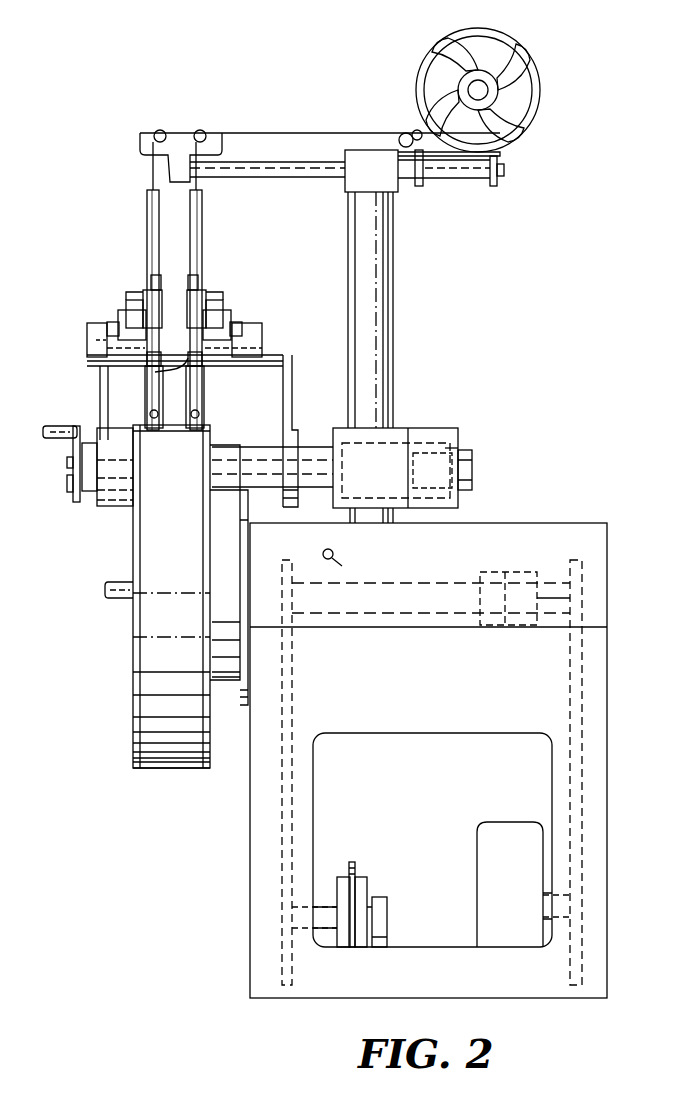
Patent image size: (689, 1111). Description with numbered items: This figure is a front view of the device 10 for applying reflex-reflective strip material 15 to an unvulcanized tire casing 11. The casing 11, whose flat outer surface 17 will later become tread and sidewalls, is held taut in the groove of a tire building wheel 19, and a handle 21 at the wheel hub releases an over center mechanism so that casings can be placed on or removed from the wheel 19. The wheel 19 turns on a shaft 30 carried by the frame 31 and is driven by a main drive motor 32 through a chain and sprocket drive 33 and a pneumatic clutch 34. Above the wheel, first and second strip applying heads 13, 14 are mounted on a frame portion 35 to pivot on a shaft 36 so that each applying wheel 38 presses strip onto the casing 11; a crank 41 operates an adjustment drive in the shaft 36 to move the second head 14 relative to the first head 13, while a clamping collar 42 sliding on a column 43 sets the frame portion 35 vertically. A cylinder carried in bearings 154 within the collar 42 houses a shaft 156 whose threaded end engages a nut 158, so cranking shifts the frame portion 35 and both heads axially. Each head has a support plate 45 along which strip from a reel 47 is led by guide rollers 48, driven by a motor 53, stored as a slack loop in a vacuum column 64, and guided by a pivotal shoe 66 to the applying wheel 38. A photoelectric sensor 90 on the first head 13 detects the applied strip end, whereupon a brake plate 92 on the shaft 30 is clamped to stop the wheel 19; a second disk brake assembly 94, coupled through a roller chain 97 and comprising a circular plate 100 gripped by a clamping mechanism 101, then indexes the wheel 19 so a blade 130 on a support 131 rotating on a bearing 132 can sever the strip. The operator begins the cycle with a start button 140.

The device 10 is at (248, 912).
The tire casing 11 is at (138, 681).
The first strip applying head 13 is at (140, 282).
The second strip applying head 14 is at (208, 282).
The strip material 15 is at (287, 128).
The outer surface 17 is at (158, 652).
The tire building wheel 19 is at (132, 726).
The handle 21 is at (106, 598).
The shaft 30 is at (450, 584).
The frame 31 is at (250, 988).
The main drive motor 32 is at (497, 824).
The chain and sprocket drive 33 is at (582, 838).
The pneumatic clutch 34 is at (520, 572).
The frame portion 35 is at (100, 388).
The shaft 36 is at (262, 440).
The applying wheel 38 is at (125, 318).
The crank 41 is at (46, 430).
The clamping collar 42 is at (402, 428).
The column 43 is at (384, 304).
The support plate 45 is at (157, 393).
The reel 47 is at (520, 45).
The guide rollers 48 is at (168, 128).
The motor 53 is at (100, 338).
The vacuum column 64 is at (147, 212).
The guide shoe 66 is at (100, 356).
The photoelectric sensor 90 is at (148, 375).
The circular plate 92 is at (280, 545).
The second disk brake assembly 94 is at (372, 862).
The roller chain 97 is at (280, 828).
The circular plate 100 is at (355, 862).
The clamping mechanism 101 is at (374, 876).
The blade 130 is at (130, 305).
The support 131 is at (130, 300).
The bearing 132 is at (110, 325).
The start button 140 is at (347, 564).
The bearings 154 is at (440, 440).
The shaft 156 is at (472, 462).
The nut 158 is at (458, 440).